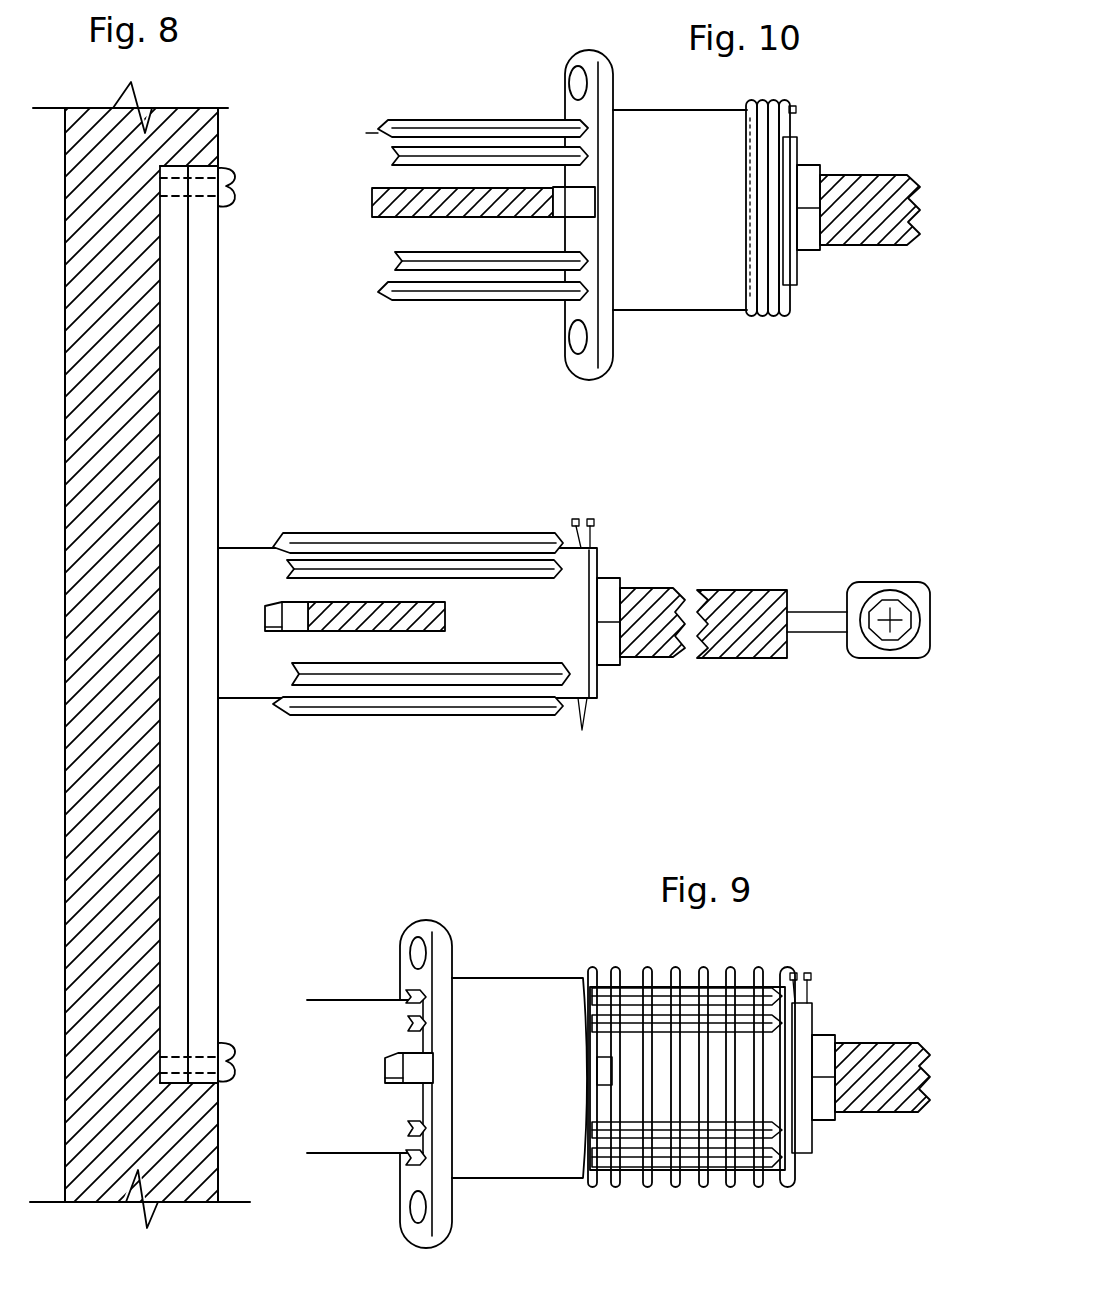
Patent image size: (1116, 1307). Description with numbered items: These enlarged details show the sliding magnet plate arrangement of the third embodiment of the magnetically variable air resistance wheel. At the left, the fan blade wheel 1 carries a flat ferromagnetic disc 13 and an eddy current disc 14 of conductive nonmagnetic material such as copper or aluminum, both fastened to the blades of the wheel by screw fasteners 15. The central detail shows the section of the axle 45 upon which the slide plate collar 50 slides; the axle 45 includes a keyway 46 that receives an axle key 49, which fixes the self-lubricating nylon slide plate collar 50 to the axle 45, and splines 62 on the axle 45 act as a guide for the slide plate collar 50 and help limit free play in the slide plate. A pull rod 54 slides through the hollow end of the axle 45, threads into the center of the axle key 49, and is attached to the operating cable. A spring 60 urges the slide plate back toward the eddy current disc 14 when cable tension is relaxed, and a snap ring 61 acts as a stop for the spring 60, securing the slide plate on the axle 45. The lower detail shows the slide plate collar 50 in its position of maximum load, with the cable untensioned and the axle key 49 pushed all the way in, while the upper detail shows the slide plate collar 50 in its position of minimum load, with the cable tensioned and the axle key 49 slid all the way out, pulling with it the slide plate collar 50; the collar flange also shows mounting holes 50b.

In FIG. 8, the fan blade wheel 1 is at (147, 372).
In FIG. 8, the ferromagnetic disc 13 is at (189, 624).
In FIG. 8, the eddy current disc 14 is at (207, 322).
In FIG. 8, the screw fasteners 15 is at (232, 188).
In FIG. 8, the axle 45 is at (257, 688).
In FIG. 10, the axle 45 is at (377, 255).
In FIG. 9, the axle 45 is at (366, 1077).
In FIG. 8, the keyway 46 is at (447, 618).
In FIG. 10, the keyway 46 is at (395, 203).
In FIG. 8, the axle key 49 is at (282, 644).
In FIG. 10, the axle key 49 is at (572, 207).
In FIG. 9, the axle key 49 is at (385, 1066).
In FIG. 10, the slide plate collar 50 is at (670, 283).
In FIG. 9, the slide plate collar 50 is at (510, 1153).
In FIG. 10, the mounting holes 50b is at (574, 340).
In FIG. 9, the mounting holes 50b is at (393, 952).
In FIG. 8, the pull rod 54 is at (878, 658).
In FIG. 10, the pull rod 54 is at (858, 207).
In FIG. 9, the pull rod 54 is at (871, 1077).
In FIG. 10, the spring 60 is at (770, 316).
In FIG. 9, the spring 60 is at (615, 1187).
In FIG. 8, the snap ring 61 is at (600, 523).
In FIG. 10, the snap ring 61 is at (798, 110).
In FIG. 9, the snap ring 61 is at (812, 980).
In FIG. 8, the splines 62 is at (380, 678).
In FIG. 10, the splines 62 is at (463, 300).